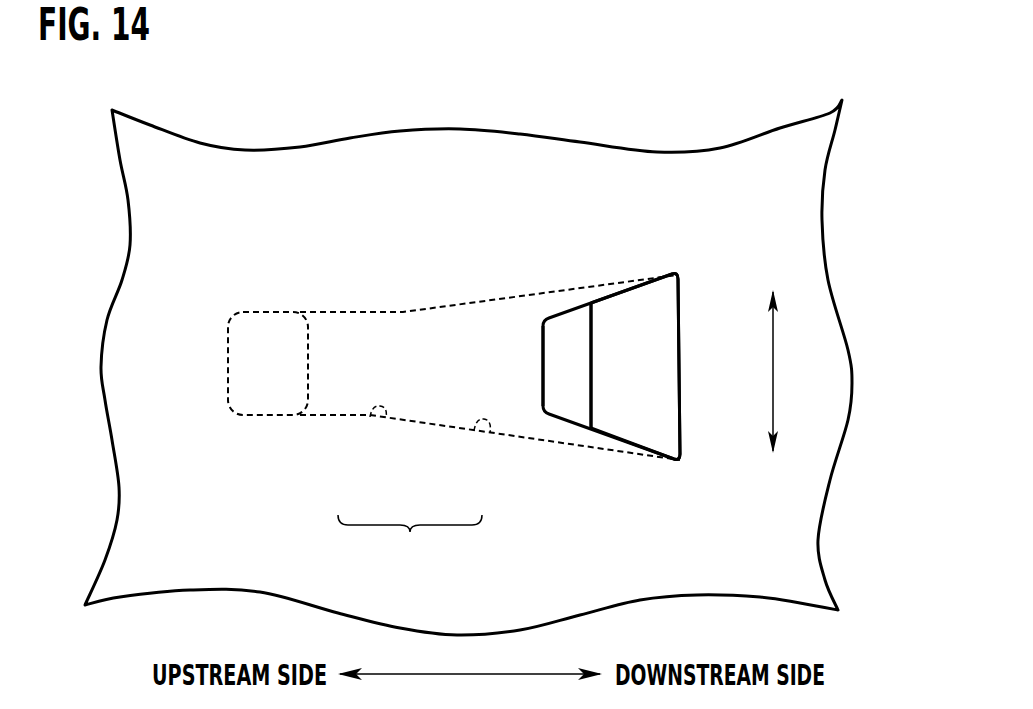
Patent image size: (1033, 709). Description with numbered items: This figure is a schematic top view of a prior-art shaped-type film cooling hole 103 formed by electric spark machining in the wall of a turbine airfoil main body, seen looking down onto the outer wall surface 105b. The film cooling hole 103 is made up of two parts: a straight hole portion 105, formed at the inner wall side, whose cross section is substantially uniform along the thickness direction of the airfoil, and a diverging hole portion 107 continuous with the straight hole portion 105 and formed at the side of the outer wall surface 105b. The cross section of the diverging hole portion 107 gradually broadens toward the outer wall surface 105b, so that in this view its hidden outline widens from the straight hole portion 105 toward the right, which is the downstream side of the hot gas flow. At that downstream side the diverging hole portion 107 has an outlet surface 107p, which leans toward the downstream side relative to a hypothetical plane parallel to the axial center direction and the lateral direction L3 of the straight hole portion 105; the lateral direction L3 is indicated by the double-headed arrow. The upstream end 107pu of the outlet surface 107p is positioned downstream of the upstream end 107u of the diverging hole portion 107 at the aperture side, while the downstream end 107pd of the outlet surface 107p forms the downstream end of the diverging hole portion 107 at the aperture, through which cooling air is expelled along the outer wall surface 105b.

The outer wall surface 105b is at (463, 162).
The outlet surface 107p is at (623, 308).
The downstream end of the outlet surface 107pd is at (692, 290).
The upstream end of the diverging hole portion 107u is at (543, 373).
The upstream end of the outlet surface 107pu is at (590, 380).
The straight hole portion 105 is at (372, 418).
The diverging hole portion 107 is at (476, 432).
The film cooling hole 103 is at (410, 542).
The lateral direction L3 is at (773, 378).